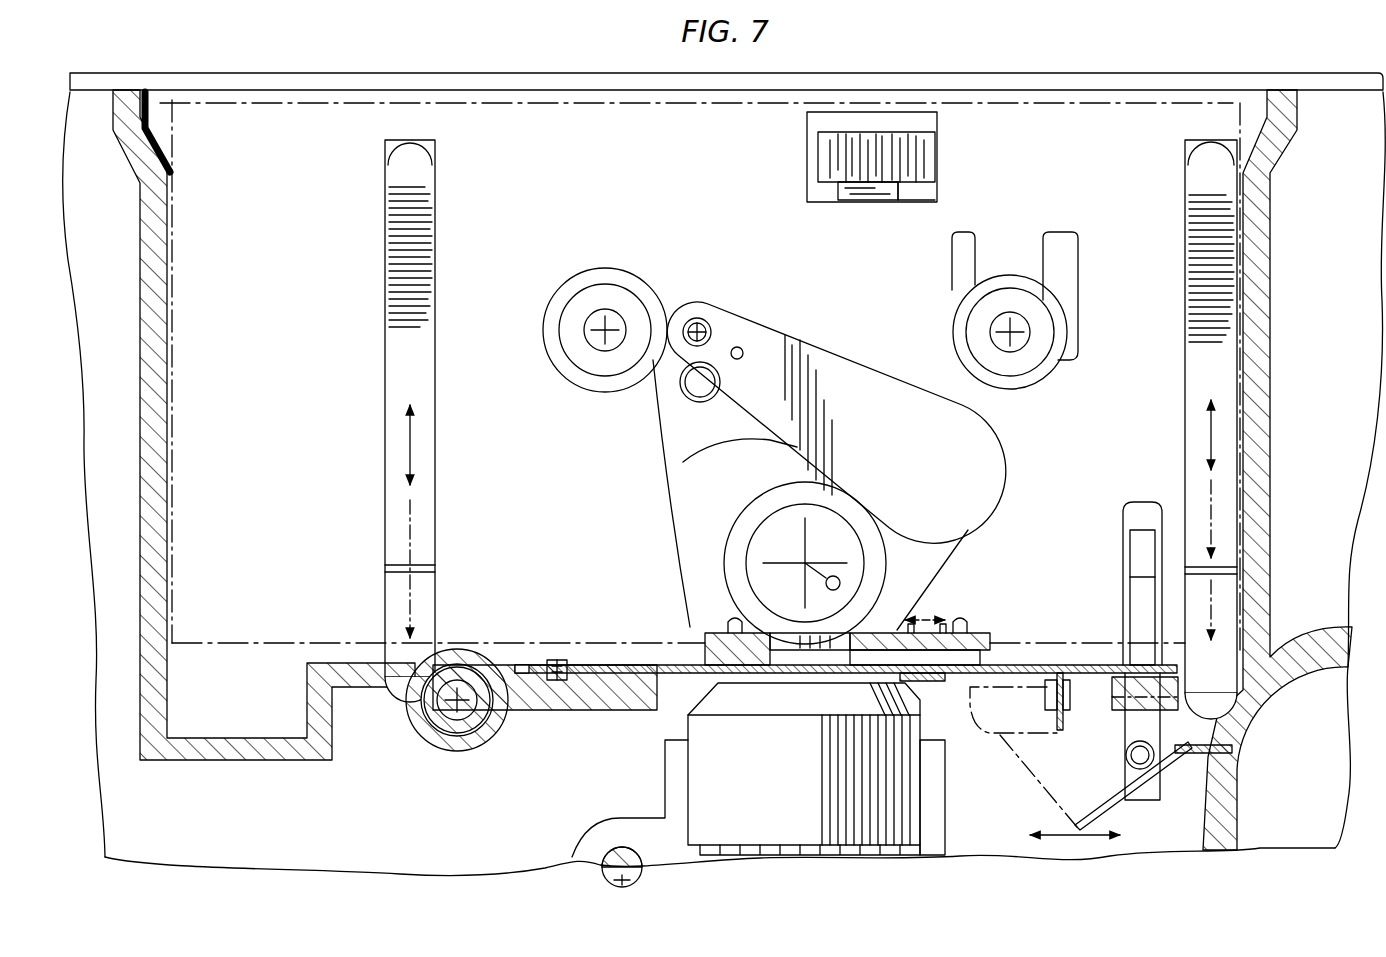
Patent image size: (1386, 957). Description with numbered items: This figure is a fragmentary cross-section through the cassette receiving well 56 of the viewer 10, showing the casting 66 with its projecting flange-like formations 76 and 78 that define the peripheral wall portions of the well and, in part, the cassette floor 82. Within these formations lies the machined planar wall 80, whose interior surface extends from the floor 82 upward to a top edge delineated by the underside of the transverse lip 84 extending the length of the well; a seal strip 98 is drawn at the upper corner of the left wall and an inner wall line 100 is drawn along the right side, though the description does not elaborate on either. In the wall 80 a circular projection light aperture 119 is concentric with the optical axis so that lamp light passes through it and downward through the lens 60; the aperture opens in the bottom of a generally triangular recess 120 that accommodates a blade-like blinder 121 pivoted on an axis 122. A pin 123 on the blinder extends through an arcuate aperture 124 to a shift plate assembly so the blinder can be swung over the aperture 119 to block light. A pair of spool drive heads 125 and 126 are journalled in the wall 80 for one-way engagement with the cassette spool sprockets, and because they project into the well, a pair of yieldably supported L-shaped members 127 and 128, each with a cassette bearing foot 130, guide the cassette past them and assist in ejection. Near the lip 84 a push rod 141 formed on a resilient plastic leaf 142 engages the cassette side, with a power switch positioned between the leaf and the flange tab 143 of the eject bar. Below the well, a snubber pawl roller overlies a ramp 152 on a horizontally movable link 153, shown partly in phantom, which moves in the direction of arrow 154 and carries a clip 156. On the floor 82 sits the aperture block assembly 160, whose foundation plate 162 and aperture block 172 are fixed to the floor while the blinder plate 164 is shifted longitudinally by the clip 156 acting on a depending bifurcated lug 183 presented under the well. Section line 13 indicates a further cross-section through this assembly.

The viewer 10 is at (1143, 520).
The section line 13- 13 is at (507, 600).
The cassette receiving well 56 is at (1078, 133).
The lens 60 is at (784, 785).
The casting 66 is at (1314, 250).
The flange-like formation 76 is at (158, 207).
The flange-like formation 78 is at (1255, 431).
The planar wall 80 is at (641, 190).
The cassette floor 82 is at (366, 662).
The transverse lip 84 is at (797, 90).
The seal strip 98 is at (147, 128).
The inner wall line 100 is at (1248, 134).
The circular projection light aperture 119 is at (775, 547).
The triangular recess 120 is at (1010, 468).
The blade-like blinder 121 is at (838, 545).
The axis 122 is at (703, 325).
The pin 123 is at (740, 349).
The arcuate aperture 124 is at (686, 376).
The spool drive head 125 is at (618, 304).
The spool drive head 126 is at (1043, 371).
The L-shaped member 127 is at (426, 366).
The L-shaped member 128 is at (1202, 293).
The cassette bearing foot 130 is at (420, 566).
The push rod 141 is at (872, 151).
The resilient plastic leaf 142 is at (926, 158).
The flange tab 143 is at (868, 190).
The ramp 152 is at (1102, 798).
The link 153 is at (1046, 765).
The arrow 154 is at (1068, 836).
The clip 156 is at (1062, 730).
The aperture block assembly 160 is at (930, 618).
The foundation plate 162 is at (612, 665).
The blinder plate 164 is at (1052, 660).
The aperture block 172 is at (702, 640).
The bifurcated lug 183 is at (1066, 690).